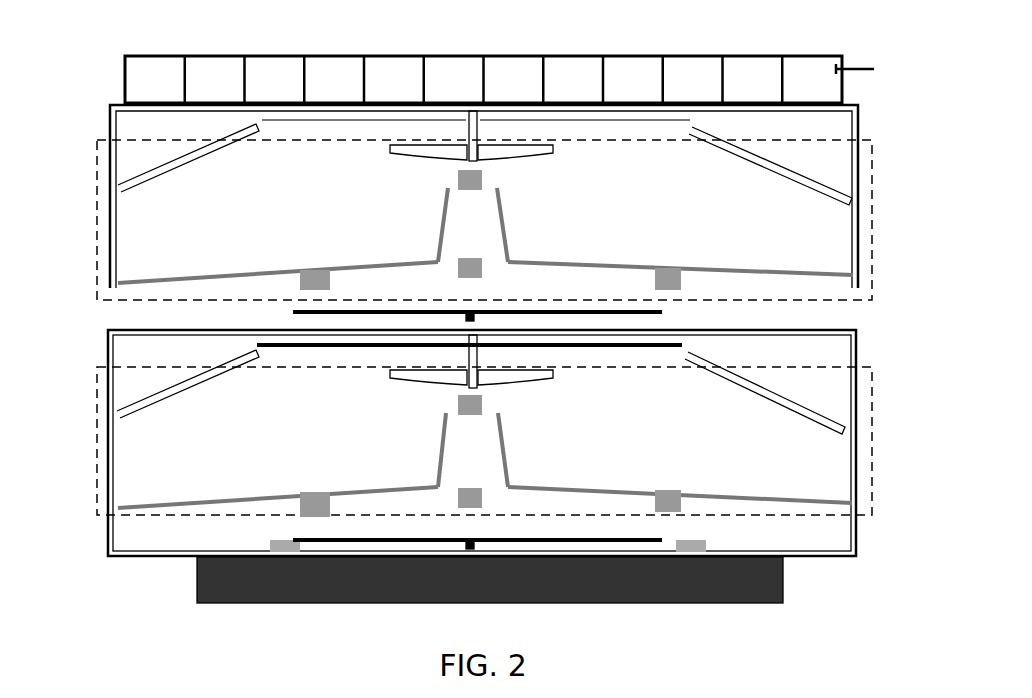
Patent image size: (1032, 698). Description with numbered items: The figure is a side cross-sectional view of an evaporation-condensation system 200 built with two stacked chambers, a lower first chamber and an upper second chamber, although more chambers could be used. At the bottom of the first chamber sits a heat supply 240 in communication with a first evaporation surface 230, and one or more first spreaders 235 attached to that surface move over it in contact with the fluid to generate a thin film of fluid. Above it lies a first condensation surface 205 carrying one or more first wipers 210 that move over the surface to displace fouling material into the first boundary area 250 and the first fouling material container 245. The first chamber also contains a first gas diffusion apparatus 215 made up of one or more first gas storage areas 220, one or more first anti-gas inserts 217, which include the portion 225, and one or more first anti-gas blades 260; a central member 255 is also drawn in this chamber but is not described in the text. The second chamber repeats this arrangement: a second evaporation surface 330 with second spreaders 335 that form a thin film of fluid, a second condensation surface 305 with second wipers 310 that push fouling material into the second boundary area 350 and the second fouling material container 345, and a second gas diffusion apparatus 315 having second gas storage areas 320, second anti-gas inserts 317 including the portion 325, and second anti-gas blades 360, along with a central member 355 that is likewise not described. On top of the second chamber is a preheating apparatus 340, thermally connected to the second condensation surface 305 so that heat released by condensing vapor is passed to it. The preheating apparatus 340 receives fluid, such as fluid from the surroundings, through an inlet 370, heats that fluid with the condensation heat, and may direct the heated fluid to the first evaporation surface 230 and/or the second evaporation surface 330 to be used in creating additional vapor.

The evaporation-condensation system 200 is at (86, 58).
The preheating apparatus 340 is at (400, 55).
The inlet 370 is at (870, 64).
The second condensation surface 305 is at (560, 105).
The vertical duct 355 is at (481, 137).
The second wipers 310 is at (340, 124).
The second anti-gas blades 360 is at (425, 160).
The second fouling material container 345 is at (180, 172).
The second boundary area 350 is at (150, 156).
The second gas diffusion apparatus 315 is at (878, 180).
The second gas storage areas 320 is at (332, 238).
The second anti-gas inserts 317 is at (362, 262).
The second anti-gas insert portion 325 is at (488, 240).
The second spreaders 335 is at (362, 308).
The second evaporation surface 330 is at (232, 324).
The first condensation surface 205 is at (588, 328).
The first wipers 210 is at (355, 349).
The lower vertical duct 255 is at (482, 362).
The first anti-gas blades 260 is at (405, 382).
The first boundary area 250 is at (143, 376).
The first gas diffusion apparatus 215 is at (878, 432).
The first fouling material container 245 is at (195, 394).
The first gas storage areas 220 is at (328, 458).
The first anti-gas inserts 217 is at (366, 487).
The first anti-gas insert portion 225 is at (466, 456).
The first spreaders 235 is at (364, 538).
The first evaporation surface 230 is at (206, 548).
The heat supply 240 is at (196, 590).